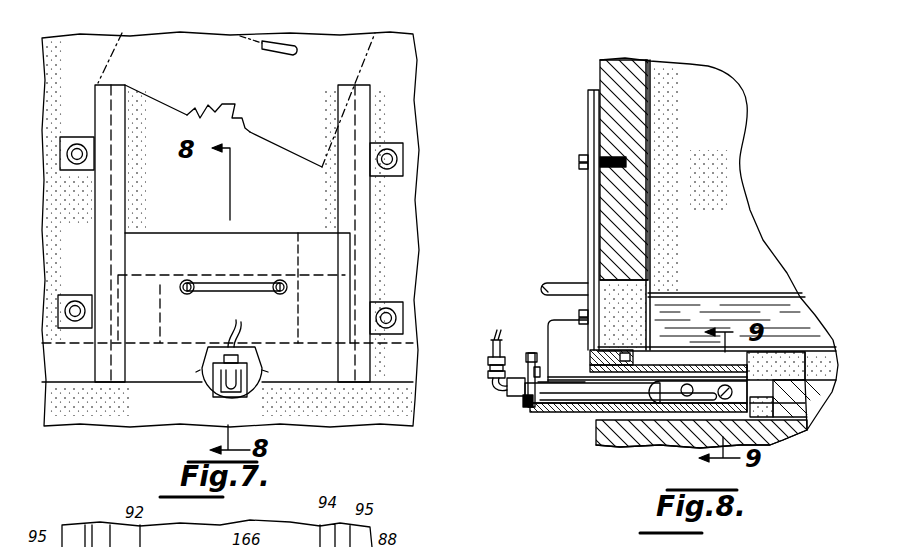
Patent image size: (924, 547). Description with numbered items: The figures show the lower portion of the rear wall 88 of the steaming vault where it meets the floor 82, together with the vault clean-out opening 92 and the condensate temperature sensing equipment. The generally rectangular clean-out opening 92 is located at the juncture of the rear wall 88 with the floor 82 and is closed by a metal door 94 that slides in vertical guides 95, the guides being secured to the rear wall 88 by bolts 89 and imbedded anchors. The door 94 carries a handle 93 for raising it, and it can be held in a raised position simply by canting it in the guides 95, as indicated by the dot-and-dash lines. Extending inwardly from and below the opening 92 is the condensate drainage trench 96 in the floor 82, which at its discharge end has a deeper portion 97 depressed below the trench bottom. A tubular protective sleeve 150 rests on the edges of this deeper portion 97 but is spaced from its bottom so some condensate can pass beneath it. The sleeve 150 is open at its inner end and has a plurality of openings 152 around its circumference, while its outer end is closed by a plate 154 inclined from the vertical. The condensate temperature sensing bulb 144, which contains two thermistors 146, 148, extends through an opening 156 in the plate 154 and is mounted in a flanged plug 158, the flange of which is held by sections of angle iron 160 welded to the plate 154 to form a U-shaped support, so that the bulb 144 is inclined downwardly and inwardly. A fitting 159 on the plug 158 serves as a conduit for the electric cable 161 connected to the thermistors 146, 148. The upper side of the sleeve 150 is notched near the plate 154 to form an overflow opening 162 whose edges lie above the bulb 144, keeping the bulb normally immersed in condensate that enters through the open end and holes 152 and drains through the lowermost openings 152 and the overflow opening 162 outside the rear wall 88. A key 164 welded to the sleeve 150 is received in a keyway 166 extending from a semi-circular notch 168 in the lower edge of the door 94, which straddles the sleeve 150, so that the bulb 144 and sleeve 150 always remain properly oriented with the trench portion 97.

In FIG. 8, the floor 82 is at (827, 345).
In FIG. 7, the rear wall 88 is at (407, 50).
In FIG. 8, the rear wall 88 is at (650, 110).
In FIG. 7, the bolts 89 is at (76, 145).
In FIG. 8, the bolts 89 is at (578, 158).
In FIG. 7, the vault clean-out opening 92 is at (148, 278).
In FIG. 8, the vault clean-out opening 92 is at (668, 292).
In FIG. 7, the handle 93 is at (275, 50).
In FIG. 8, the handle 93 is at (556, 282).
In FIG. 7, the metal door 94 is at (325, 54).
In FIG. 8, the metal door 94 is at (585, 238).
In FIG. 7, the vertical guides 95 is at (105, 228).
In FIG. 8, the vertical guides 95 is at (588, 135).
In FIG. 8, the condensate drainage trench 96 is at (834, 388).
In FIG. 8, the deeper portion 97 is at (658, 430).
In FIG. 8, the condensate temperature sensing bulb 144 is at (554, 400).
In FIG. 8, the thermistor 146 is at (582, 412).
In FIG. 8, the thermistor 148 is at (685, 363).
In FIG. 8, the tubular protective sleeve 150 is at (700, 364).
In FIG. 8, the openings 152 is at (745, 383).
In FIG. 7, the plate 154 is at (248, 348).
In FIG. 8, the plate 154 is at (530, 414).
In FIG. 8, the opening 156 is at (522, 380).
In FIG. 8, the flanged plug 158 is at (504, 400).
In FIG. 7, the fitting 159 is at (213, 385).
In FIG. 8, the fitting 159 is at (488, 368).
In FIG. 7, the angle iron sections 160 is at (262, 395).
In FIG. 8, the angle iron sections 160 is at (512, 398).
In FIG. 7, the electric cable 161 is at (226, 345).
In FIG. 8, the electric cable 161 is at (491, 344).
In FIG. 8, the overflow opening 162 is at (546, 324).
In FIG. 8, the key 164 is at (590, 358).
In FIG. 7, the keyway 166 is at (250, 105).
In FIG. 8, the keyway 166 is at (628, 362).
In FIG. 7, the semi-circular notch 168 is at (205, 100).